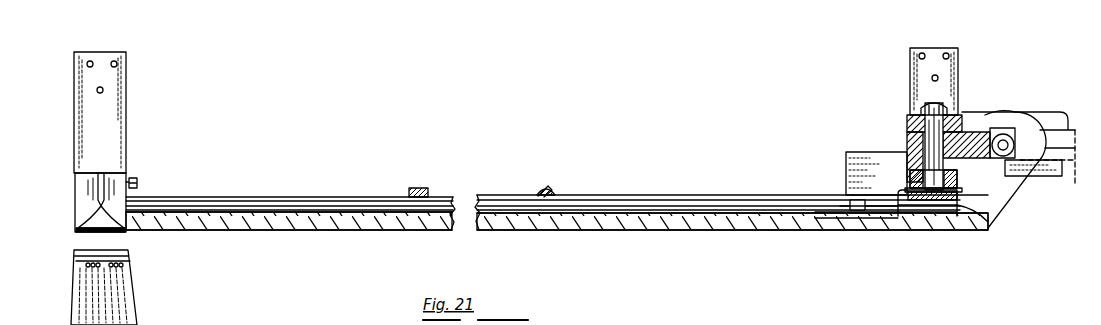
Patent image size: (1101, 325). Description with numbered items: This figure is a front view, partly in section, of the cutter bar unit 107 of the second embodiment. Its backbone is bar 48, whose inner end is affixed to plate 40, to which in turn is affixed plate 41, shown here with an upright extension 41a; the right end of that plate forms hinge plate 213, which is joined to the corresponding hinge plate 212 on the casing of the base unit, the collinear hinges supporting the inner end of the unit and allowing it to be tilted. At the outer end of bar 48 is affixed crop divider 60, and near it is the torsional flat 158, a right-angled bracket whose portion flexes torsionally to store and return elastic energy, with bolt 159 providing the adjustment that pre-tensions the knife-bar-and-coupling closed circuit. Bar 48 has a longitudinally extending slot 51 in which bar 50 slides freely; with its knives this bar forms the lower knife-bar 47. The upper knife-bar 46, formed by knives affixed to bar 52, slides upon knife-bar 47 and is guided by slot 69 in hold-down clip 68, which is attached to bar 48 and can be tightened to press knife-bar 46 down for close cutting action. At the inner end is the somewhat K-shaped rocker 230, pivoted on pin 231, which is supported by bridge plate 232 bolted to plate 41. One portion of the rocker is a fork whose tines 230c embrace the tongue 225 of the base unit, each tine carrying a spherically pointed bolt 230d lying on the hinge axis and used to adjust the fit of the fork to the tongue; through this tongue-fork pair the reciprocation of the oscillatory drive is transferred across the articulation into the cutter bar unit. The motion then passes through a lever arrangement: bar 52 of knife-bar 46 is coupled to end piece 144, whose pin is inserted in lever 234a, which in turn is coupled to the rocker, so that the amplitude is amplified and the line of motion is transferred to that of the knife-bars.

The torsional flat 158 is at (129, 90).
The bolt 159 is at (138, 182).
The crop divider 60 is at (78, 204).
The slot 51 is at (247, 208).
The bar 50 is at (365, 207).
The hold-down clip 68 is at (414, 188).
The slot 69 is at (538, 197).
The upper knife-bar 46 is at (641, 195).
The lower knife-bar 47 is at (657, 214).
The bar 48 is at (740, 226).
The bar 52 is at (710, 198).
The cutter bar unit 107 is at (600, 231).
The plate 41 is at (848, 156).
The post 41a is at (958, 81).
The hinge plate 212 is at (1047, 112).
The bridge plate 232 is at (922, 125).
The rocker 230 is at (914, 143).
The tine 230c is at (978, 132).
The spherically pointed bolt 230d is at (1005, 150).
The pin 231 is at (953, 168).
The tongue 225 is at (1043, 152).
The hinge plate 213 is at (1038, 166).
The end piece 144 is at (903, 200).
The plate 40 is at (928, 226).
The lever 234a is at (960, 202).